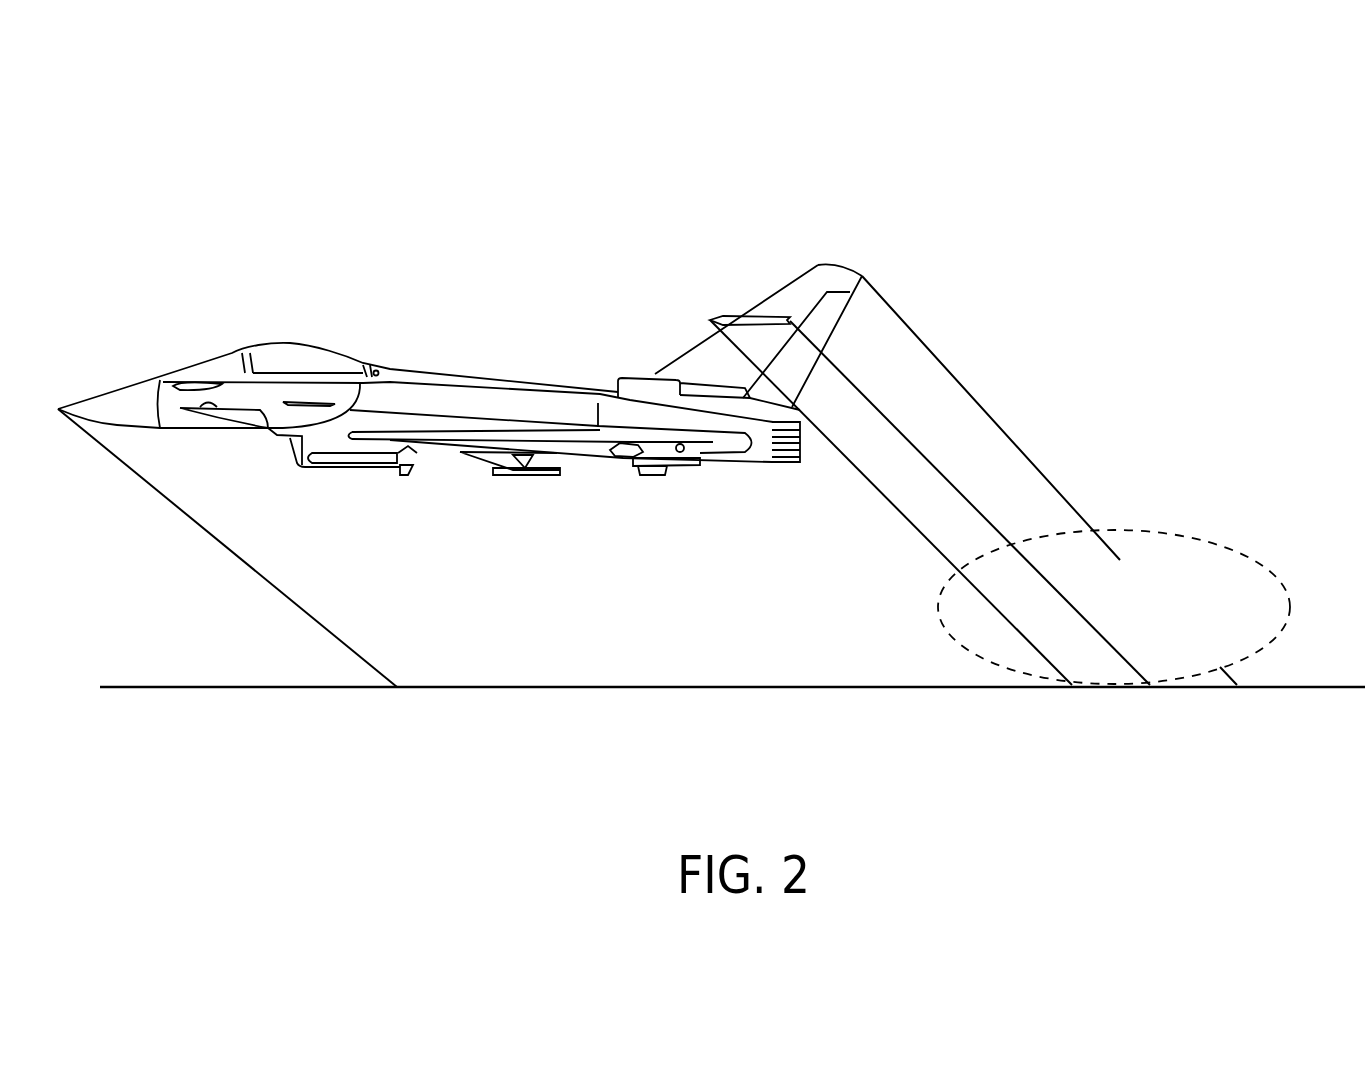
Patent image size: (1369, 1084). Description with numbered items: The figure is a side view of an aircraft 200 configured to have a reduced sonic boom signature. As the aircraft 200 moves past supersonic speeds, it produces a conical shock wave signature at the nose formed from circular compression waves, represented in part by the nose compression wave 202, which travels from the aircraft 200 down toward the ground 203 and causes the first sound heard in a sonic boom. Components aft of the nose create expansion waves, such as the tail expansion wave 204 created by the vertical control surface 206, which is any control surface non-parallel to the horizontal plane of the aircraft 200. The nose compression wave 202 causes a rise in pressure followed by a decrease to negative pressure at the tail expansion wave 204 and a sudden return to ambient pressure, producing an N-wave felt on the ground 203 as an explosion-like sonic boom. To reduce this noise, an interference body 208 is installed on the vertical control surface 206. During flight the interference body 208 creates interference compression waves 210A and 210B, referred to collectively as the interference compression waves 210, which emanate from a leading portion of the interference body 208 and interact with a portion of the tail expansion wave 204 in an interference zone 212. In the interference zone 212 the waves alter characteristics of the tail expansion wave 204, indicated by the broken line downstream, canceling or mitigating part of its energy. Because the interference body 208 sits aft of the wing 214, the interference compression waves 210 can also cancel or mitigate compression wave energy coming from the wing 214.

The aircraft 200 is at (126, 121).
The nose compression wave 202 is at (253, 565).
The ground 203 is at (470, 687).
The tail expansion wave 204 is at (917, 335).
The vertical control surface 206 is at (813, 270).
The interference body 208 is at (727, 315).
The interference compression waves 210 is at (888, 423).
The interference compression wave 210A is at (863, 480).
The interference compression wave 210B is at (903, 433).
The interference zone 212 is at (940, 577).
The wing 214 is at (552, 443).